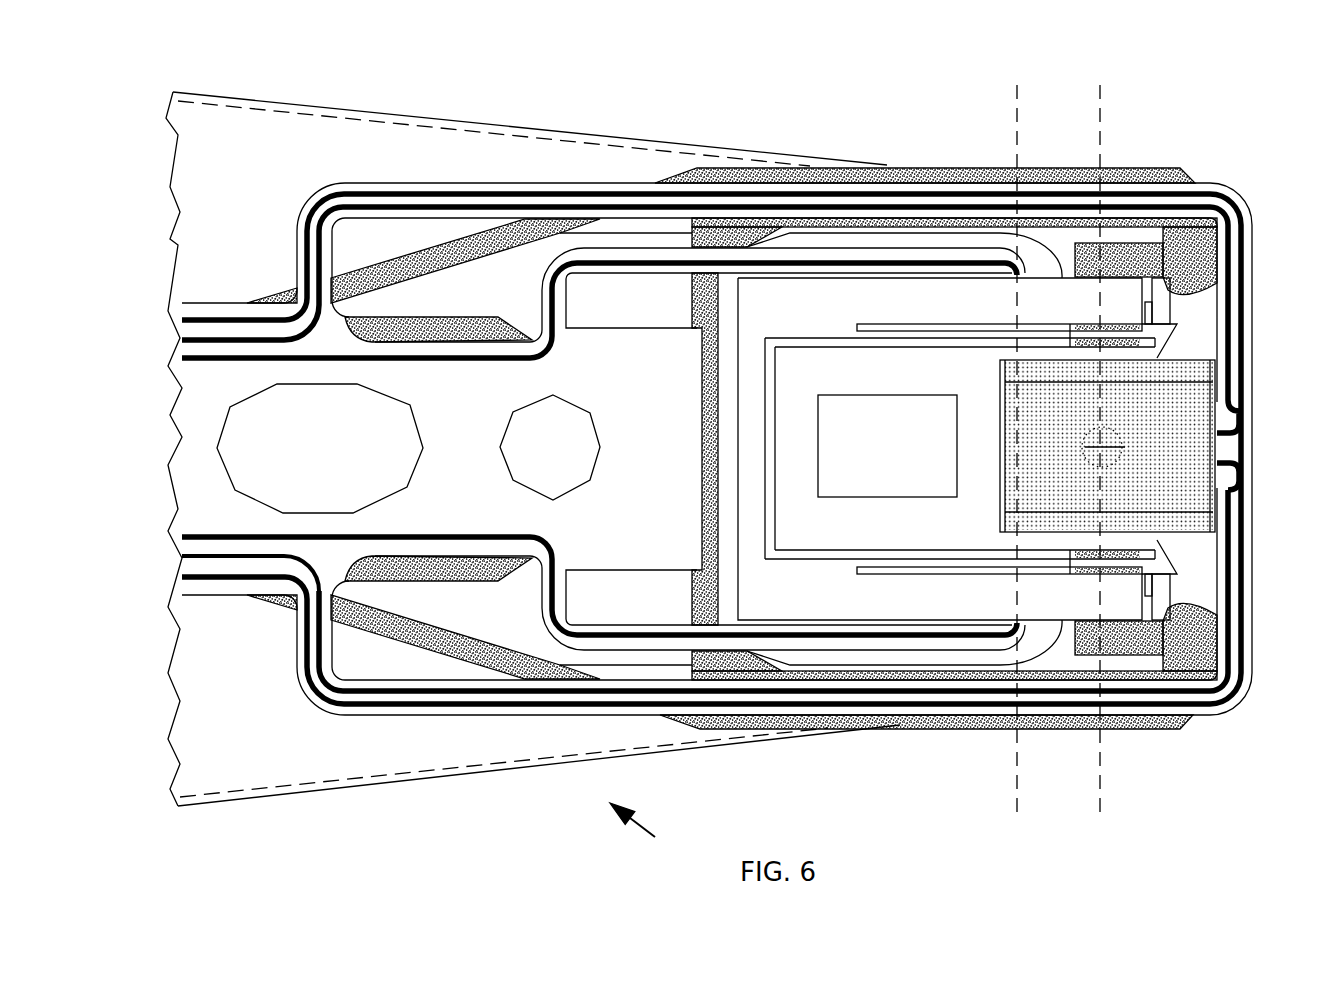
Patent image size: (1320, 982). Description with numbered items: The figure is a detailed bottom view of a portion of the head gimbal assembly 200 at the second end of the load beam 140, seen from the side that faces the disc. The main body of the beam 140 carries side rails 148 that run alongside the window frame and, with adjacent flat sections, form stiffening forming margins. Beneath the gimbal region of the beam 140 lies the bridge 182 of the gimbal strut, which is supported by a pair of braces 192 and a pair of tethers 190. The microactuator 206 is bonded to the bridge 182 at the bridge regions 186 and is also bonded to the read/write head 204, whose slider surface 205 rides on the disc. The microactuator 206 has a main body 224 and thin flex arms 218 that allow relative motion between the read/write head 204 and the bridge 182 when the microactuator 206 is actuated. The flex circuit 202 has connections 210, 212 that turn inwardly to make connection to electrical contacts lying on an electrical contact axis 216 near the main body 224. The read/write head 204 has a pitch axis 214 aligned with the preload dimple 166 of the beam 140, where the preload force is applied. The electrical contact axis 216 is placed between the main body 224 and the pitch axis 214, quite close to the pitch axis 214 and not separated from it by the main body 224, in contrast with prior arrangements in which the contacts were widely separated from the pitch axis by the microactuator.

The beam 140 is at (207, 741).
The side rails 148 is at (293, 105).
The preload dimple 166 is at (1115, 462).
The bridge 182 is at (1117, 263).
The bridge regions 186 is at (1123, 297).
The tethers 190 is at (700, 307).
The braces 192 is at (503, 240).
The head gimbal assembly 200 is at (653, 825).
The flex circuit 202 is at (610, 394).
The read/write head 204 is at (1148, 427).
The slider surface 205 is at (1238, 352).
The microactuator 206 is at (864, 268).
The connection 210 is at (1007, 273).
The connection 212 is at (958, 637).
The pitch axis 214 is at (1102, 113).
The electrical contact axis 216 is at (1018, 127).
The flex arms 218 is at (1147, 333).
The main body 224 is at (848, 459).